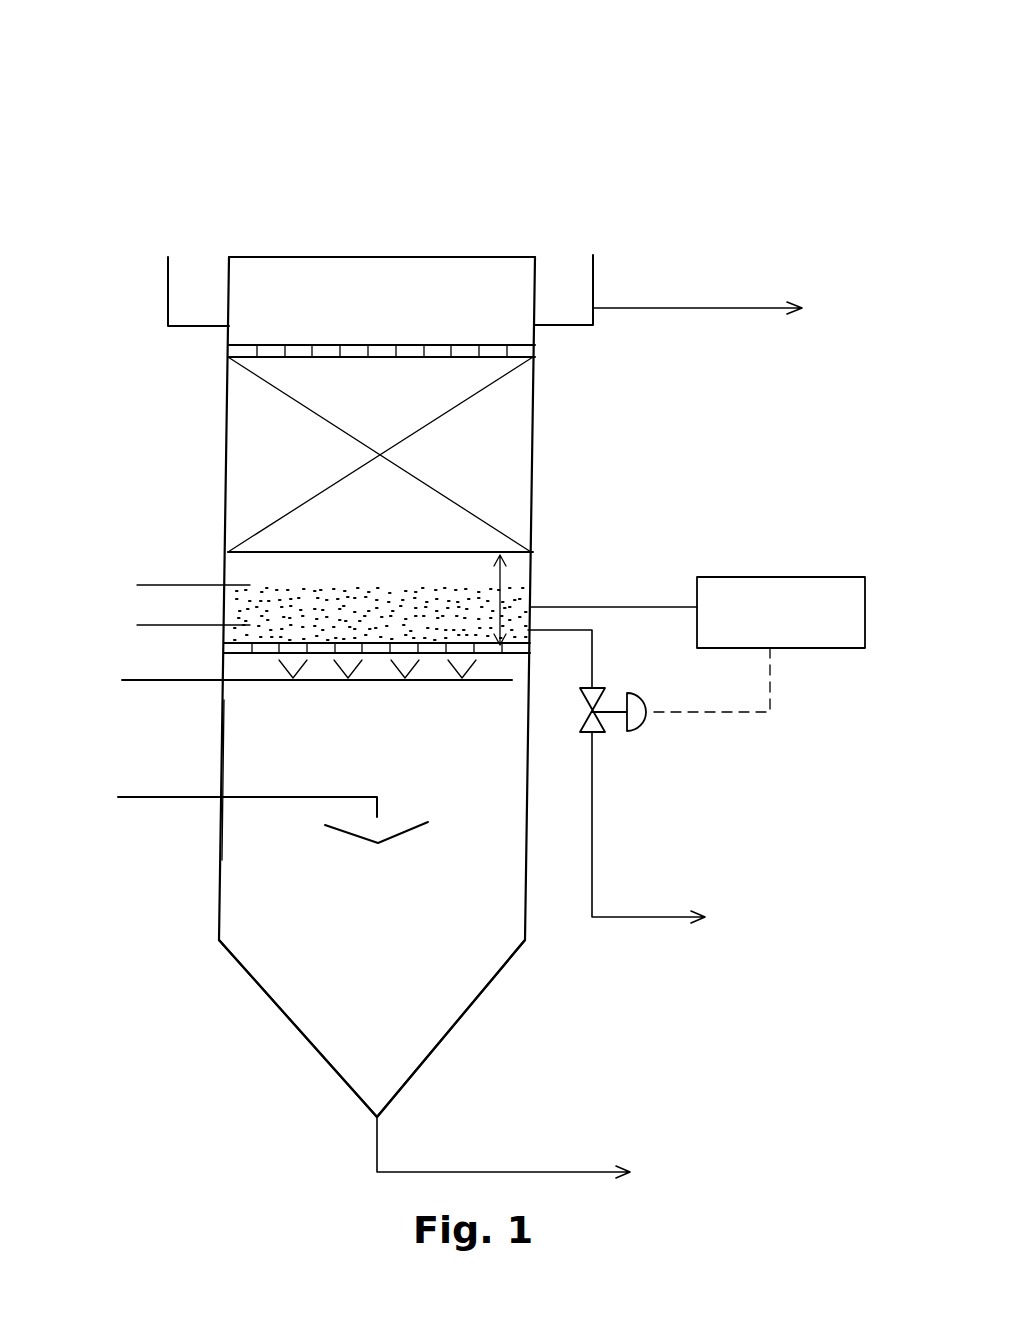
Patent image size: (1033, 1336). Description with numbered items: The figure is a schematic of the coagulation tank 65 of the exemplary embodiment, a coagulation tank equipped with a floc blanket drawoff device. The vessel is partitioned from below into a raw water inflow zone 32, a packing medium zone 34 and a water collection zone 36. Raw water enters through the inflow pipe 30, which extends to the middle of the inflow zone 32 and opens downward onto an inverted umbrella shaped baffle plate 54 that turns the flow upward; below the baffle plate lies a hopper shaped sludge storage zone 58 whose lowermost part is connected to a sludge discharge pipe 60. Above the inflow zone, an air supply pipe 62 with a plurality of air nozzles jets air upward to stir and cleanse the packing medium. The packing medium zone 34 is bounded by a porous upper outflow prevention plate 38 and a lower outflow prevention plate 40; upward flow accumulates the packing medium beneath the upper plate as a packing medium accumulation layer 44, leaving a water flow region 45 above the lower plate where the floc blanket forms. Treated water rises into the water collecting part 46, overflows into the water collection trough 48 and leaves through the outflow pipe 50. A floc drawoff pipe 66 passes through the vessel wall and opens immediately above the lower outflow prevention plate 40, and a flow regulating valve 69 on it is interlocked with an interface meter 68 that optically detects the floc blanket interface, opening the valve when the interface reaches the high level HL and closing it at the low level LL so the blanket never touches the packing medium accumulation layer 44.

The inflow pipe 30 is at (152, 797).
The raw water inflow zone 32 is at (384, 758).
The packing medium zone 34 is at (387, 592).
The water collection zone 36 is at (398, 320).
The upper outflow prevention plate 38 is at (463, 358).
The lower outflow prevention plate 40 is at (223, 638).
The packing medium accumulation layer 44 is at (518, 474).
The water flow region 45 is at (531, 583).
The water collecting part 46 is at (458, 278).
The water collection trough 48 is at (595, 270).
The outflow pipe 50 is at (697, 308).
The baffle plate 54 is at (340, 832).
The sludge storage zone 58 is at (379, 978).
The sludge discharge pipe 60 is at (505, 1172).
The air supply pipe 62 is at (142, 679).
The coagulation tank 65 is at (600, 130).
The floc drawoff pipe 66 is at (592, 838).
The interface meter 68 is at (808, 577).
The flow regulating valve 69 is at (600, 720).